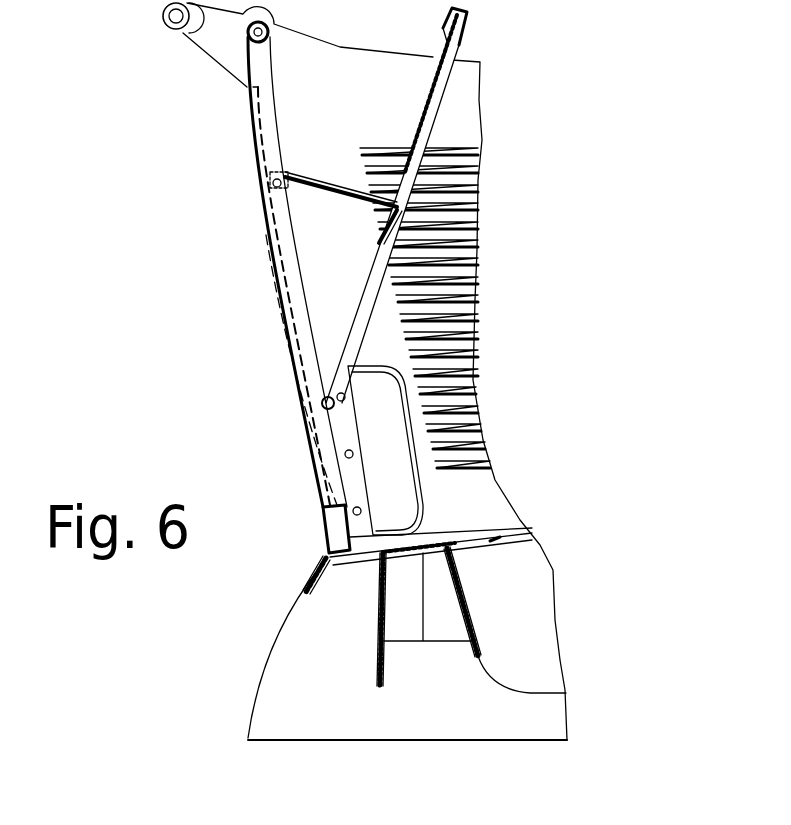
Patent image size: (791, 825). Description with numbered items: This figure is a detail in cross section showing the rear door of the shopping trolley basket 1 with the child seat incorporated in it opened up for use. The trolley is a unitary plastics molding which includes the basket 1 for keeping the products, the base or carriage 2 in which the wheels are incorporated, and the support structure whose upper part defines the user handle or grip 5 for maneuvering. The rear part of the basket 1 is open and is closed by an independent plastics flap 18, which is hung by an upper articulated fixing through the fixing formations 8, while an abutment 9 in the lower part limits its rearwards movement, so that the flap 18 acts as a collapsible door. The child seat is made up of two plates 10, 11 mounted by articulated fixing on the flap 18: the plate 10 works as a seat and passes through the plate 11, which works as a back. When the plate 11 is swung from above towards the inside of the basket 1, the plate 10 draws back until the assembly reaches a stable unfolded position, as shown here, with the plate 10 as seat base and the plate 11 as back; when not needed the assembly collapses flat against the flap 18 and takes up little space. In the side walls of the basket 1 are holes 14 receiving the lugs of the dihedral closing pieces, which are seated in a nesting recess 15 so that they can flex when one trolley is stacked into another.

The basket 1 is at (452, 293).
The base or carriage 2 is at (533, 715).
The user handle or grip 5 is at (168, 24).
The fixing formations 8 is at (250, 40).
The abutment 9 is at (327, 548).
The plate 10 is at (330, 191).
The plate 11 is at (432, 116).
The holes 14 is at (364, 514).
The nesting recess 15 is at (363, 382).
The flap 18 is at (262, 150).